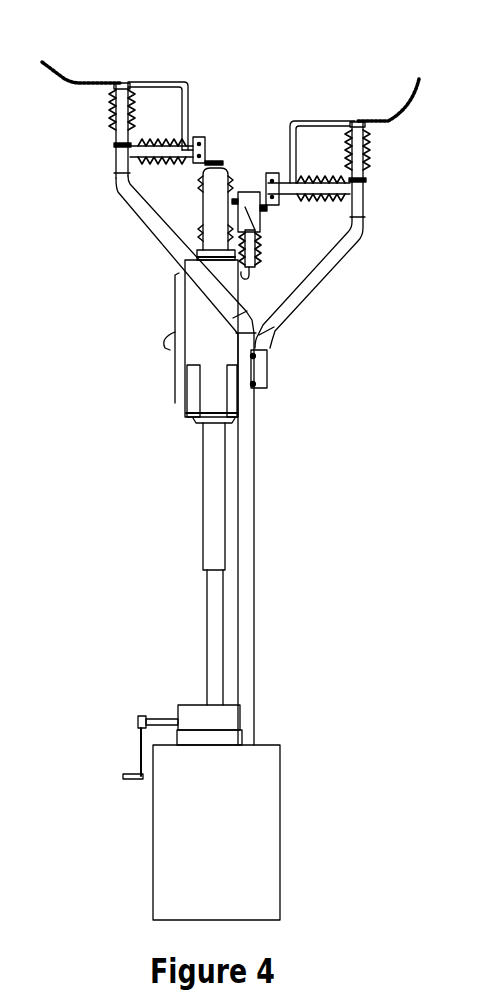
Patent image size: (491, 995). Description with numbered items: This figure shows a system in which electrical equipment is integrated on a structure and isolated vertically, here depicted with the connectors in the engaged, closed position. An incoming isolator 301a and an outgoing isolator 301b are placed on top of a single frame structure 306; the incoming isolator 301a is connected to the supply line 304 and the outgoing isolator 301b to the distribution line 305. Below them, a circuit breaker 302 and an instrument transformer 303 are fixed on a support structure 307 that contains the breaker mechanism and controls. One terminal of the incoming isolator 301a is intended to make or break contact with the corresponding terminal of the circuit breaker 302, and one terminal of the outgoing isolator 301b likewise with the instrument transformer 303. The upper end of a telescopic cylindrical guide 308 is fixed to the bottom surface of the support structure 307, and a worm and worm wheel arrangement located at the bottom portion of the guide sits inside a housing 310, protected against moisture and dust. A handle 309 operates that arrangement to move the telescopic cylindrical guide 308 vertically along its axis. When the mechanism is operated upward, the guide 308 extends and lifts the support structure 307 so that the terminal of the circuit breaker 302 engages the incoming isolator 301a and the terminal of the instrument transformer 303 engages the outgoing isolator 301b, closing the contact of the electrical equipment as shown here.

The incoming isolator 301a is at (193, 147).
The outgoing isolator 301b is at (273, 175).
The circuit breaker 302 is at (212, 212).
The instrument transformer 303 is at (257, 250).
The supply line 304 is at (55, 70).
The distribution line 305 is at (403, 104).
The frame structure 306 is at (252, 548).
The support structure 307 is at (175, 375).
The telescopic cylindrical guide 308 is at (215, 513).
The handle 309 is at (140, 718).
The housing 310 is at (207, 713).